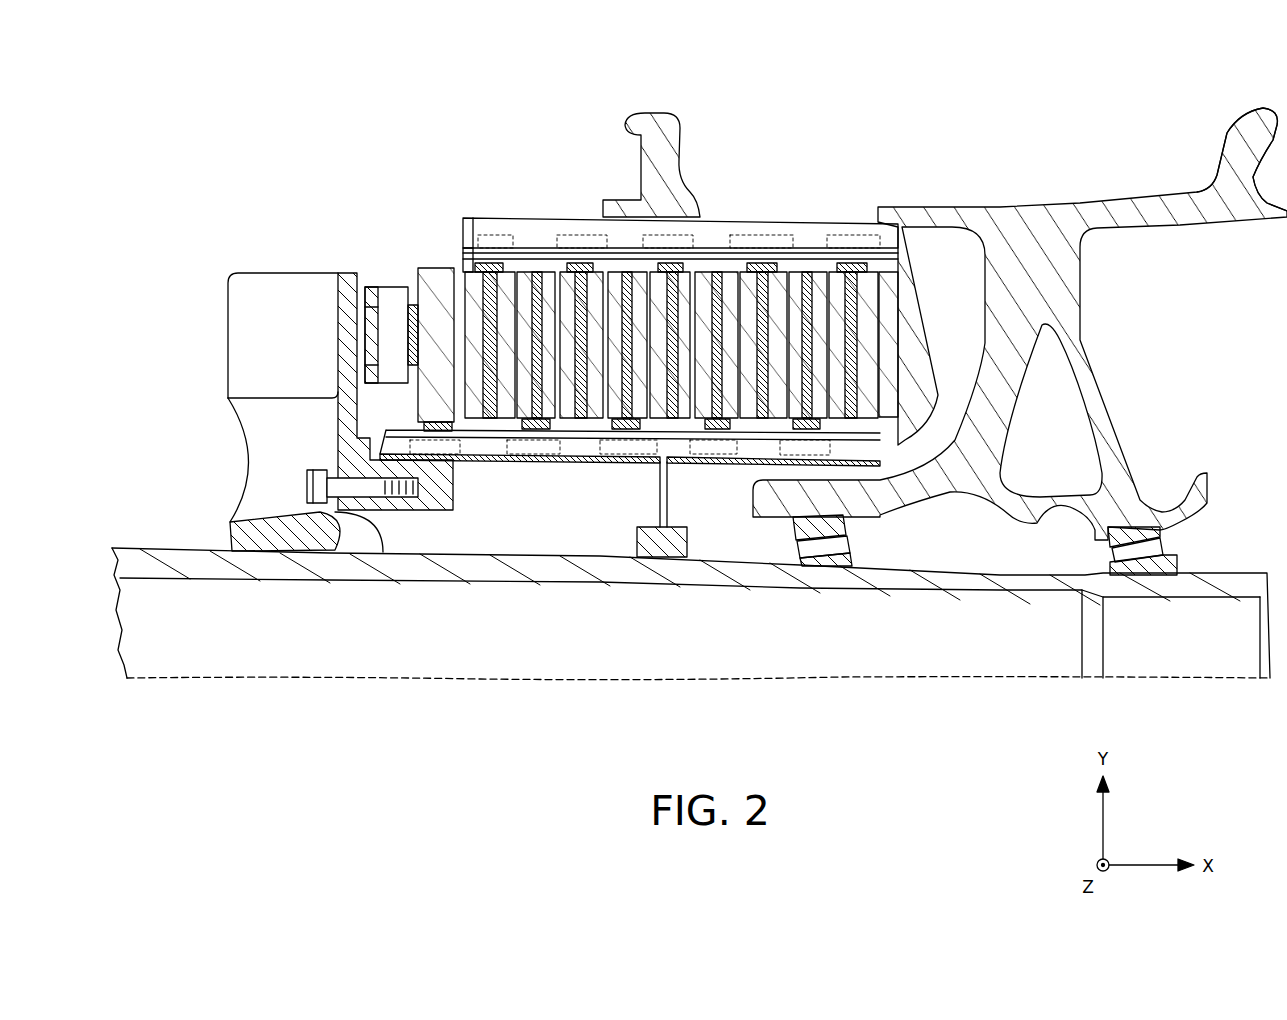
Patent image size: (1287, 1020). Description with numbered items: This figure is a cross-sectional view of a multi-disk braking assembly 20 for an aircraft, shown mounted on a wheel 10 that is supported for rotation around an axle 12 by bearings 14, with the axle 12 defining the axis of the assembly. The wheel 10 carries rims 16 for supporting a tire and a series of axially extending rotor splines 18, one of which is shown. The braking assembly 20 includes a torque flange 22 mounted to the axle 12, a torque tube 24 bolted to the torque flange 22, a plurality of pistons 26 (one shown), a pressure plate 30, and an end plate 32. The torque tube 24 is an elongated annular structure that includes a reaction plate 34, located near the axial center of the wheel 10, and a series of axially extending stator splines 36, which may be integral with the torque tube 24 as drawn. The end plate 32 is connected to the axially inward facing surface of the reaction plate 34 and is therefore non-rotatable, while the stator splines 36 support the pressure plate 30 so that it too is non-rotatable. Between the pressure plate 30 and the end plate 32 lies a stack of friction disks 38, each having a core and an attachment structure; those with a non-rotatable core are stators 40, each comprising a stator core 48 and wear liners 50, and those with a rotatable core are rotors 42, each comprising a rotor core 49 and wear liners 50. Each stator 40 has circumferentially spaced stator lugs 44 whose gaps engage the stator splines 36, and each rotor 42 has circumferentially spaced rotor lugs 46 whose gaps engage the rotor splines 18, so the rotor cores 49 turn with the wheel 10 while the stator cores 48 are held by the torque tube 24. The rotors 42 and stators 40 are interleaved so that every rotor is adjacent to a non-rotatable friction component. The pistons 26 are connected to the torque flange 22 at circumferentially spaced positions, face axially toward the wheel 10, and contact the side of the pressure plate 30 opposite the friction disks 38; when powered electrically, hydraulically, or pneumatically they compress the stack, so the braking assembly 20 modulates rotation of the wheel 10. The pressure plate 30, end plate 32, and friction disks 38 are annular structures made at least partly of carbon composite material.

The wheel 10 is at (1095, 170).
The axle 12 is at (1000, 574).
The bearings 14 is at (856, 545).
The rims 16 is at (672, 117).
The rotor splines 18 is at (623, 225).
The multi-disk braking assembly 20 is at (424, 105).
The torque flange 22 is at (330, 448).
The torque tube 24 is at (530, 440).
The pistons 26 is at (392, 287).
The pressure plate 30 is at (432, 268).
The end plate 32 is at (890, 268).
The reaction plate 34 is at (1005, 324).
The stator splines 36 is at (592, 450).
The friction disks 38 is at (455, 255).
The stator 40 is at (543, 455).
The rotor 42 is at (485, 254).
The stator lugs 44 is at (780, 447).
The rotor lugs 46 is at (743, 242).
The stator core 48 is at (810, 317).
The rotor core 49 is at (852, 345).
The wear liners 50 is at (815, 262).